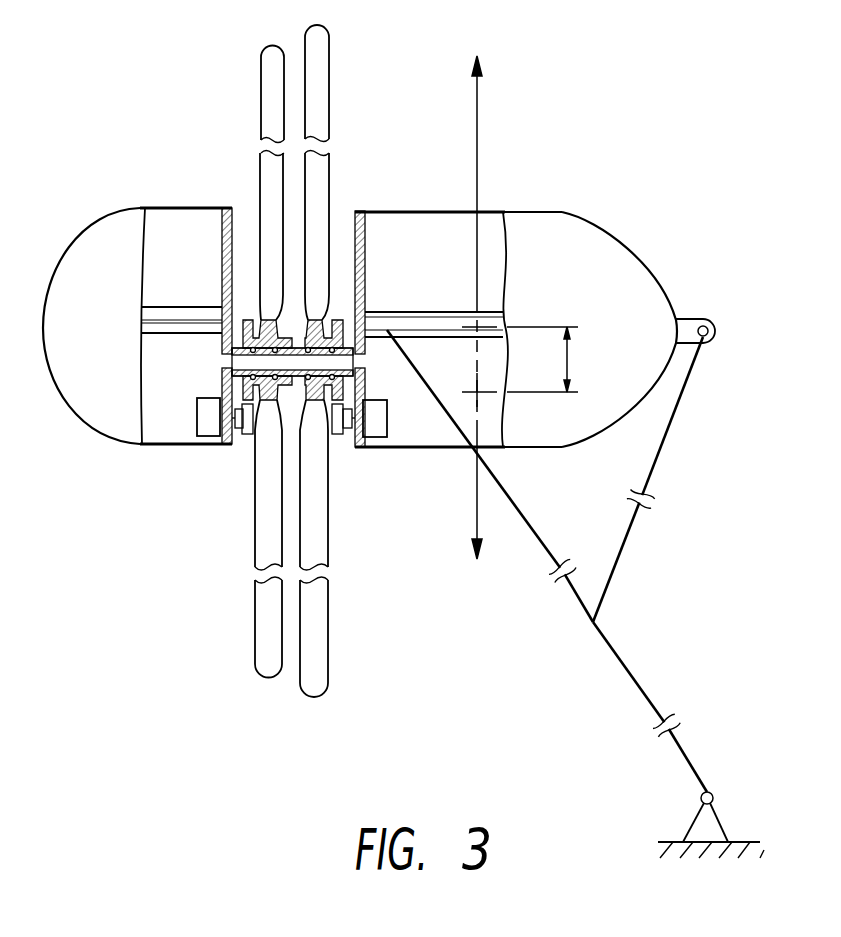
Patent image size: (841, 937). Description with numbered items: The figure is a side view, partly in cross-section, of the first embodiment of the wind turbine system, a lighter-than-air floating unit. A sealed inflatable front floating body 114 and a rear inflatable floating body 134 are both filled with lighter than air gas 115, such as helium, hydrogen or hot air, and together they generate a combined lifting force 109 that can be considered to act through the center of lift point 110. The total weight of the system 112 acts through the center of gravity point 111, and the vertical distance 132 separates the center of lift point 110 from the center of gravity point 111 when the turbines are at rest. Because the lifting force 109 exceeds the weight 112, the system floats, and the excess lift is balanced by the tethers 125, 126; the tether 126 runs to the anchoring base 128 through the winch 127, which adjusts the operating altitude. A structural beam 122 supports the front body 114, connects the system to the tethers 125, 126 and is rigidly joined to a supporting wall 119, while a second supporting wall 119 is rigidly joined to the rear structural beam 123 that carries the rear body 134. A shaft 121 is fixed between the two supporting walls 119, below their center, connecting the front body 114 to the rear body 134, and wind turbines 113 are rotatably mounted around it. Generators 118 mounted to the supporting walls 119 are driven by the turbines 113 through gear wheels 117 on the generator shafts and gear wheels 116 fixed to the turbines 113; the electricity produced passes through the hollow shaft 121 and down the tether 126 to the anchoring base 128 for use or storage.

The combined lifting force 109 is at (480, 98).
The center of lift point 110 is at (478, 326).
The center of gravity point 111 is at (481, 394).
The total weight of the system 112 is at (472, 530).
The wind turbine 113 is at (261, 98).
The front floating body 114 is at (546, 211).
The lighter than air gas 115 is at (386, 230).
The gear wheel 116 is at (250, 318).
The gear wheel 117 is at (338, 442).
The generator 118 is at (197, 421).
The supporting wall 119 is at (222, 256).
The shaft 121 is at (222, 382).
The structural beam 122 is at (393, 312).
The rear structural beam 123 is at (161, 306).
The tether 125 is at (666, 452).
The tether 126 is at (518, 512).
The winch 127 is at (711, 792).
The anchoring base 128 is at (724, 832).
The vertical distance 132 is at (569, 362).
The rear inflatable floating body 134 is at (118, 209).